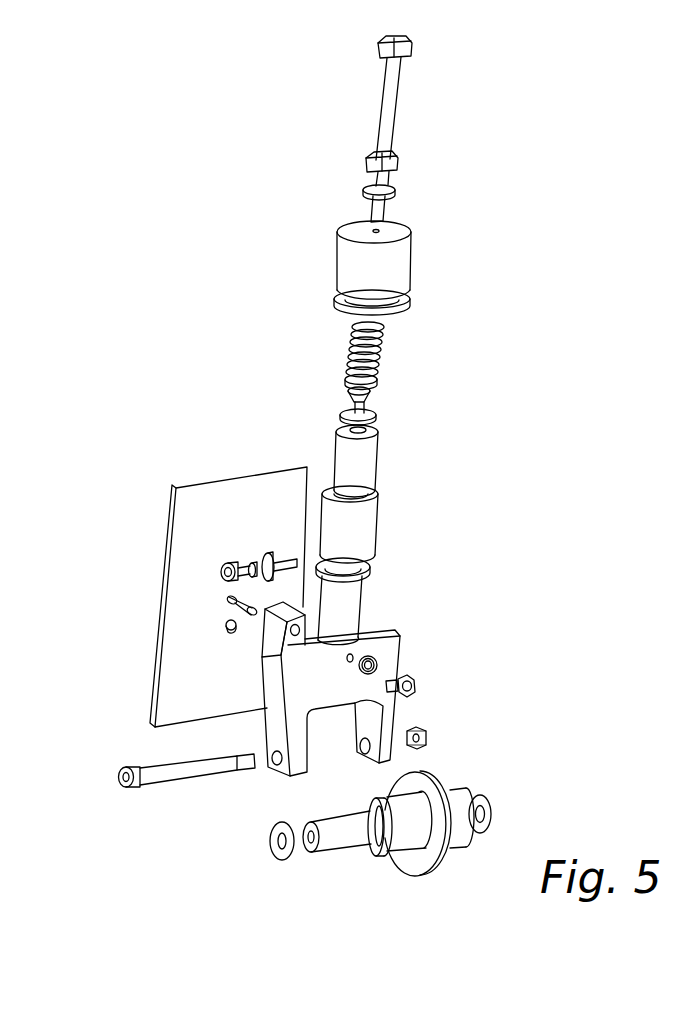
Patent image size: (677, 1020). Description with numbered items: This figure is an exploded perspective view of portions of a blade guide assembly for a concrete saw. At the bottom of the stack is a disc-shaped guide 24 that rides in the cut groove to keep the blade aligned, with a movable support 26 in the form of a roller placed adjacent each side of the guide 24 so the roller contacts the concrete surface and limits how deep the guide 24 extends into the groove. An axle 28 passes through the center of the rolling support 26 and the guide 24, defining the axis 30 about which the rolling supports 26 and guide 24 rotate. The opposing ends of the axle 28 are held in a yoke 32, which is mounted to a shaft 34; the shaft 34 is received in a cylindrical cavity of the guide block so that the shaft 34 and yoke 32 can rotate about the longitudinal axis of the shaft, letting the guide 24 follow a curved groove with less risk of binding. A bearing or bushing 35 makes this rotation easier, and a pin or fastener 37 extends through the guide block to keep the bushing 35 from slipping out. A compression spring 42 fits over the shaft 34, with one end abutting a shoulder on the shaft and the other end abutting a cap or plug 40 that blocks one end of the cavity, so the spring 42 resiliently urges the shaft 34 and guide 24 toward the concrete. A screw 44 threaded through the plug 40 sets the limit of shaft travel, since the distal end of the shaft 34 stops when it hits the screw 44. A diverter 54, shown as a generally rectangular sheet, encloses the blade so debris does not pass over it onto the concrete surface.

The guide 24 is at (427, 772).
The movable support 26 is at (405, 840).
The axle 28 is at (157, 765).
The axis 30 is at (322, 852).
The yoke 32 is at (403, 648).
The shaft 34 is at (378, 457).
The bushing 35 is at (378, 520).
The fastener 37 is at (260, 560).
The plug 40 is at (412, 266).
The compression spring 42 is at (380, 363).
The screw 44 is at (398, 118).
The diverter 54 is at (183, 517).